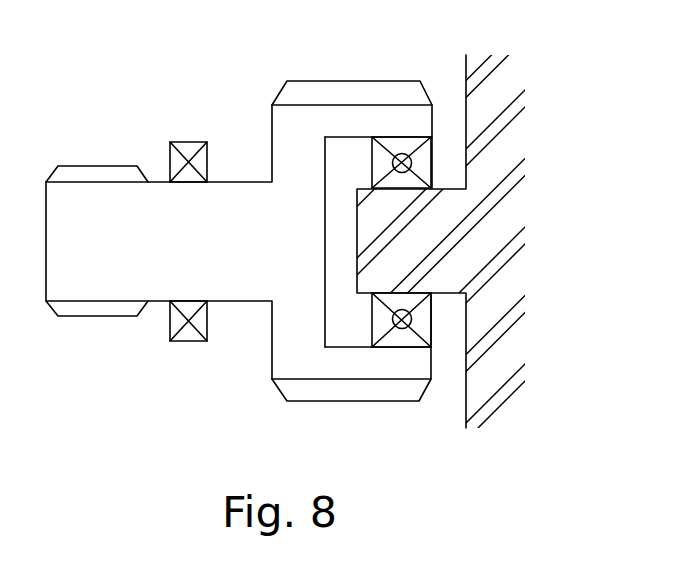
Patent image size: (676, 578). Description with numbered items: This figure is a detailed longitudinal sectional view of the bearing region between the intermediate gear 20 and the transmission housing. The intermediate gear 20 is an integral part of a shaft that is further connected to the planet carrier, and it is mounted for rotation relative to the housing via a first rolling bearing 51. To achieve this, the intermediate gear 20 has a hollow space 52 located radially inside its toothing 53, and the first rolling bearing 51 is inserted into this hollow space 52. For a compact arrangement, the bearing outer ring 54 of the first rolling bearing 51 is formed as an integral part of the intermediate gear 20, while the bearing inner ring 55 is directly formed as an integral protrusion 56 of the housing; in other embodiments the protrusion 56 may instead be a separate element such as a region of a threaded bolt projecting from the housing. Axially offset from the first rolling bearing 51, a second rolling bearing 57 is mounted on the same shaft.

The intermediate gear 20 is at (287, 349).
The first rolling bearing 51 is at (421, 326).
The hollow space 52 is at (360, 125).
The toothing 53 is at (350, 388).
The bearing outer ring 54 is at (410, 123).
The bearing inner ring 55 is at (395, 192).
The protrusion 56 is at (393, 280).
The second rolling bearing 57 is at (190, 342).